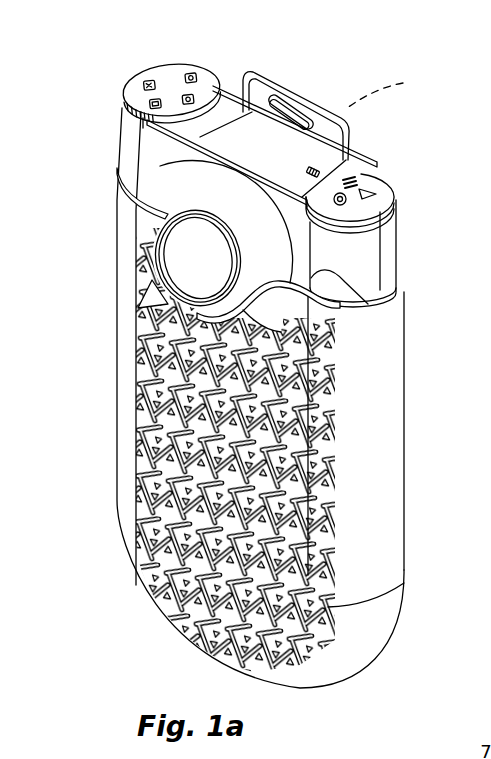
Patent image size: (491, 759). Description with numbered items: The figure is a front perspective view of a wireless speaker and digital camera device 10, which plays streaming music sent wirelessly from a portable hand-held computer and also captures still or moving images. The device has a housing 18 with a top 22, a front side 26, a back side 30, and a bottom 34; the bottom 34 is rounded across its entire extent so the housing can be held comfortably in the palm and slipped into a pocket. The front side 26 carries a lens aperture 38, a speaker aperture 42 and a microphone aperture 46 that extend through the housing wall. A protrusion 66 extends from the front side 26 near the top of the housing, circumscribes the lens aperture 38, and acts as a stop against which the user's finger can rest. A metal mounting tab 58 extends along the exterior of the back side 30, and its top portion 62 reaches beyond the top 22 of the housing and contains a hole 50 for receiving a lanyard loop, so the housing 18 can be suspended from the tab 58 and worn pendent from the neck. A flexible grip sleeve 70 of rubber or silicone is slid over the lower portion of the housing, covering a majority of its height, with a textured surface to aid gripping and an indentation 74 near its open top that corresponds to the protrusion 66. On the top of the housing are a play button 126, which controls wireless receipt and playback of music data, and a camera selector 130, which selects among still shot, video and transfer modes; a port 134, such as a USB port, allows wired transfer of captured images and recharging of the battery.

The wireless speaker and digital camera device 10 is at (110, 545).
The housing 18 is at (392, 250).
The top 22 is at (365, 160).
The front side 26 is at (148, 162).
The back side 30 is at (475, 672).
The bottom 34 is at (317, 675).
The lens aperture 38 is at (157, 268).
The speaker aperture 42 is at (213, 573).
The microphone aperture 46 is at (372, 306).
The hole 50 is at (296, 105).
The mounting tab 58 is at (250, 70).
The top portion 62 is at (280, 74).
The protrusion 66 is at (193, 203).
The grip sleeve 70 is at (387, 422).
The indentation 74 is at (338, 345).
The play button 126 is at (384, 183).
The camera selector 130 is at (163, 63).
The port 134 is at (399, 89).